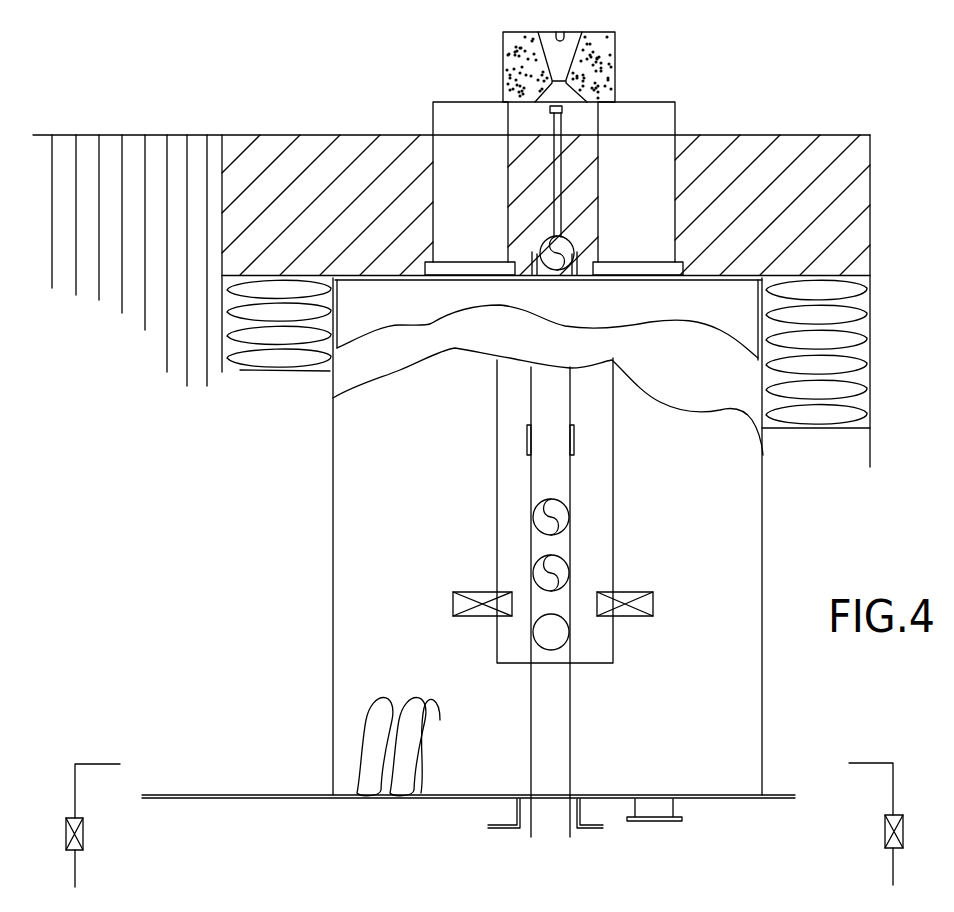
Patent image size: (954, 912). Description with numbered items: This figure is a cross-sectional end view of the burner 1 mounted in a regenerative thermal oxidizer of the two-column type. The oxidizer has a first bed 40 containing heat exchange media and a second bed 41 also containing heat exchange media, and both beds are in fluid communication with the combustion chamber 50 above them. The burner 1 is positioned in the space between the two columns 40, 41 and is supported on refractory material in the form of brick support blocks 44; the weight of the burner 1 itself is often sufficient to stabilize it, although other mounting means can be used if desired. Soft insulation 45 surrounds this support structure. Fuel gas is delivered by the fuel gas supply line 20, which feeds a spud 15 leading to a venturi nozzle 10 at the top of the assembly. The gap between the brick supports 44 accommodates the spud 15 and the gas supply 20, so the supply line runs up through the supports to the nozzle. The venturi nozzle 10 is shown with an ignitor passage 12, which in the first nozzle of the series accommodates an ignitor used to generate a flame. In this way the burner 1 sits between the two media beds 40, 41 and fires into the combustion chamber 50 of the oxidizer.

The burner 1 is at (610, 40).
The venturi nozzle 10 is at (569, 46).
The ignitor passage 12 is at (559, 33).
The spud 15 is at (560, 170).
The fuel gas supply line 20 is at (540, 246).
The first bed 40 is at (160, 488).
The second bed 41 is at (938, 491).
The brick support block 44 is at (440, 118).
The soft insulation 45 is at (357, 195).
The combustion chamber 50 is at (462, 53).